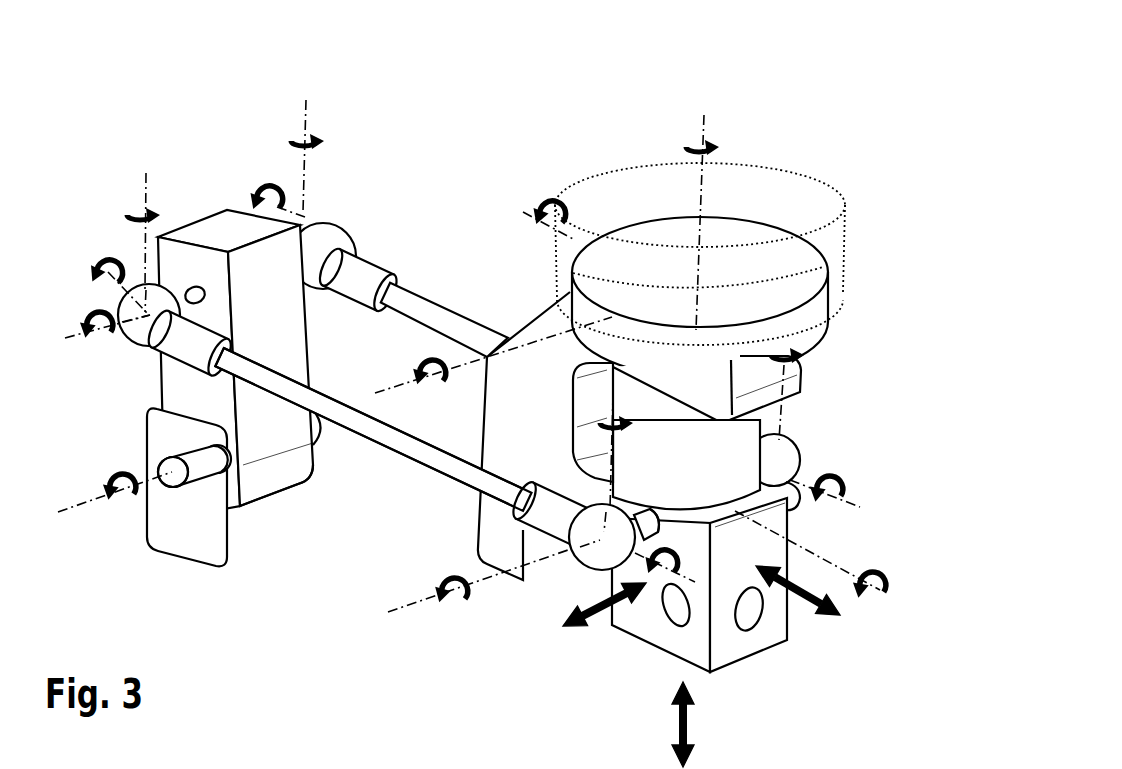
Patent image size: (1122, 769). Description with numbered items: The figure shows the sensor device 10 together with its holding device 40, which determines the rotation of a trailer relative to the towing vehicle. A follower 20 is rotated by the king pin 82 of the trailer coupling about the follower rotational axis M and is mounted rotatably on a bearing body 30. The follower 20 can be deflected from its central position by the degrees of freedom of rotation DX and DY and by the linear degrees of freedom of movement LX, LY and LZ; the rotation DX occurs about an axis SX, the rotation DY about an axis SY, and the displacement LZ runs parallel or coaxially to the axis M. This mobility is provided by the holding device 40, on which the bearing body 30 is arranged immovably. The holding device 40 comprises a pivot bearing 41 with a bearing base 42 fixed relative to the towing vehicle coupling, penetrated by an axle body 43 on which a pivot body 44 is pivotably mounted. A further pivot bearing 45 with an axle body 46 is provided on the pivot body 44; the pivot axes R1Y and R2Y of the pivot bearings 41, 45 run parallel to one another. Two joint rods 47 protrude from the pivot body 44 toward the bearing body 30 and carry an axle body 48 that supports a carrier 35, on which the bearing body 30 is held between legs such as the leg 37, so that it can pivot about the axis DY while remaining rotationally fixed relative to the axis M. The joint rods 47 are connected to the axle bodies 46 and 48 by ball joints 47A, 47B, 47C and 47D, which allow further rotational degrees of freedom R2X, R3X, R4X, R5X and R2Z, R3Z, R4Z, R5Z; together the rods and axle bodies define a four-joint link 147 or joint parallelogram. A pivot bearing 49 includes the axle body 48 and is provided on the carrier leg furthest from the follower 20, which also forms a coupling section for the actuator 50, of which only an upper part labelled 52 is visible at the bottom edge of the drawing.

The sensor device 10 is at (472, 392).
The follower 20 is at (820, 333).
The bearing body 30 is at (763, 447).
The carrier 35 is at (752, 652).
The leg 37 is at (800, 380).
The holding device 40 is at (377, 345).
The pivot bearing 41 is at (177, 483).
The bearing base 42 is at (197, 550).
The axle body 43 is at (203, 470).
The pivot body 44 is at (268, 470).
The pivot bearing 45 is at (200, 303).
The axle body 46 is at (193, 286).
The joint rods 47 is at (444, 318).
The four-joint link 147 is at (418, 456).
The ball joint 47A is at (140, 340).
The ball joint 47B is at (320, 235).
The ball joint 47C is at (587, 567).
The ball joint 47D is at (794, 470).
The axle body 48 is at (640, 520).
The pivot bearing 49 is at (655, 527).
The actuator 50 is at (287, 768).
The base plate 52 is at (227, 768).
The king pin 82 is at (806, 208).
The follower rotational axis M is at (698, 135).
The axis SX is at (525, 208).
The axis SY is at (397, 385).
The degree of freedom of rotation DX is at (853, 575).
The degree of freedom of rotation DY is at (418, 600).
The linear degree of freedom of movement LX is at (800, 617).
The linear degree of freedom of movement LY is at (562, 627).
The linear degree of freedom of movement LZ is at (690, 743).
The pivot axis R1Y is at (82, 500).
The rotational degree of freedom R2X is at (89, 266).
The pivot axis R2Y is at (80, 333).
The rotational degree of freedom R2Z is at (142, 205).
The rotational degree of freedom R3X is at (249, 190).
The rotational degree of freedom R3Z is at (305, 128).
The rotational degree of freedom R4X is at (663, 577).
The rotational degree of freedom R4Z is at (620, 441).
The rotational degree of freedom R5X is at (843, 500).
The rotational degree of freedom R5Z is at (784, 340).